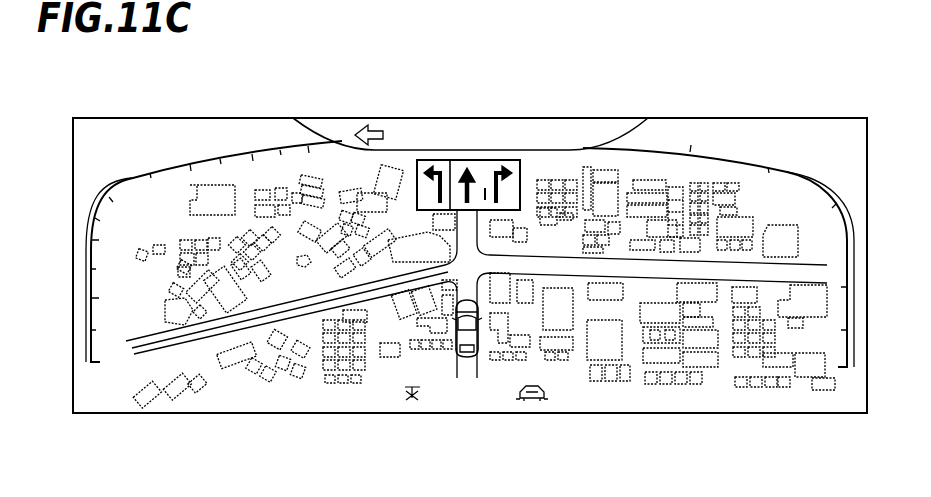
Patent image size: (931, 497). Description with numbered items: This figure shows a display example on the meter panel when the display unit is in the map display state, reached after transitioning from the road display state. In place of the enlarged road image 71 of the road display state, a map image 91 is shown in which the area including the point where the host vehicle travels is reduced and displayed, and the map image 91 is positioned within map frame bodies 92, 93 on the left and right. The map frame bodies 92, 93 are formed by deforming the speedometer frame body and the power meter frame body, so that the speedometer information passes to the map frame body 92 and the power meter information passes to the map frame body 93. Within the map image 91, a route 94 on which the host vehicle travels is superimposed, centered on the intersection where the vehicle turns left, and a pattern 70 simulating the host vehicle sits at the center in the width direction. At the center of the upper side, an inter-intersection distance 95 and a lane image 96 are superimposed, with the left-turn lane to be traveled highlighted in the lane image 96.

The road image 71 is at (470, 208).
The map frame body 92 is at (131, 180).
The map frame body 93 is at (790, 170).
The lane image 96 is at (478, 177).
The inter-intersection distance 95 is at (536, 158).
The route 94 is at (315, 300).
The pattern simulating the host vehicle 70 is at (456, 345).
The map image 91 is at (685, 358).